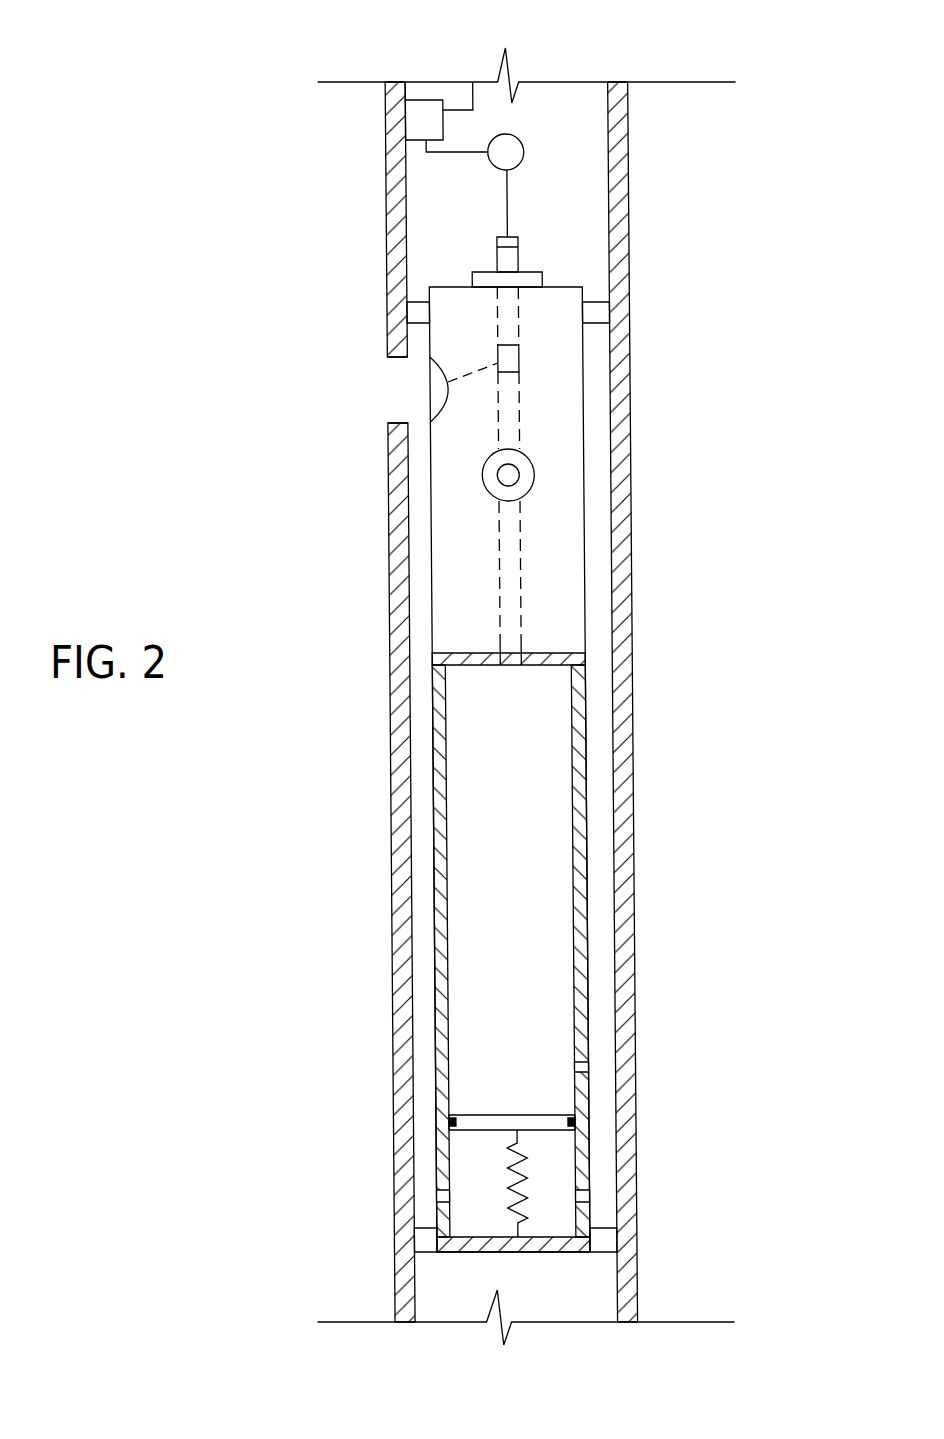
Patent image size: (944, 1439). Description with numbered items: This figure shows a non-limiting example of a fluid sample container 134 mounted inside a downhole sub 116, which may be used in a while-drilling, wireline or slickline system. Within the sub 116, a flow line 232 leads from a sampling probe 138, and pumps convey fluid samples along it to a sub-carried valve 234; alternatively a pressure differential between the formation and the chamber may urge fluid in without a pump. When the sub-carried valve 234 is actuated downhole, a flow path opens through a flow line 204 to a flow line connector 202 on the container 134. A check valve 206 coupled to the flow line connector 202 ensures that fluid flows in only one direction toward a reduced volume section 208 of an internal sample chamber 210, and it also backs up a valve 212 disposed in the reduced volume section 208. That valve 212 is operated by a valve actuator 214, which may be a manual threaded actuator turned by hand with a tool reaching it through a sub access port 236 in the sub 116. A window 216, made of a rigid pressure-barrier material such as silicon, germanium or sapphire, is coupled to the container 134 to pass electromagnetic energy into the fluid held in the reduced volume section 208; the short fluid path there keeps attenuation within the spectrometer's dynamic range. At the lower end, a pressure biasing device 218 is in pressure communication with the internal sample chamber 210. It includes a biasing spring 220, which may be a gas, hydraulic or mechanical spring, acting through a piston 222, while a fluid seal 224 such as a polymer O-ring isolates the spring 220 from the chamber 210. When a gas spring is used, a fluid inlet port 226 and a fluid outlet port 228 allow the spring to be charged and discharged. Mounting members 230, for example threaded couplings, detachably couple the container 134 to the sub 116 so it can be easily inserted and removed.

The downhole sub 116 is at (617, 147).
The fluid sample container 134 is at (581, 545).
The sampling probe 138 is at (467, 68).
The flow line connector 202 is at (516, 242).
The flow line 204 is at (505, 202).
The check valve 206 is at (495, 257).
The reduced volume section 208 is at (491, 555).
The internal sample chamber 210 is at (523, 850).
The valve 212 is at (517, 355).
The valve actuator 214 is at (444, 381).
The window 216 is at (505, 475).
The pressure biasing device 218 is at (466, 1170).
The biasing spring 220 is at (512, 1160).
The piston 222 is at (464, 1120).
The fluid seal 224 is at (567, 1120).
The fluid inlet port 226 is at (421, 1205).
The fluid outlet port 228 is at (585, 1193).
The mounting members 230 is at (596, 310).
The flow line 232 is at (513, 97).
The sub-carried valve 234 is at (514, 154).
The sub access port 236 is at (385, 364).